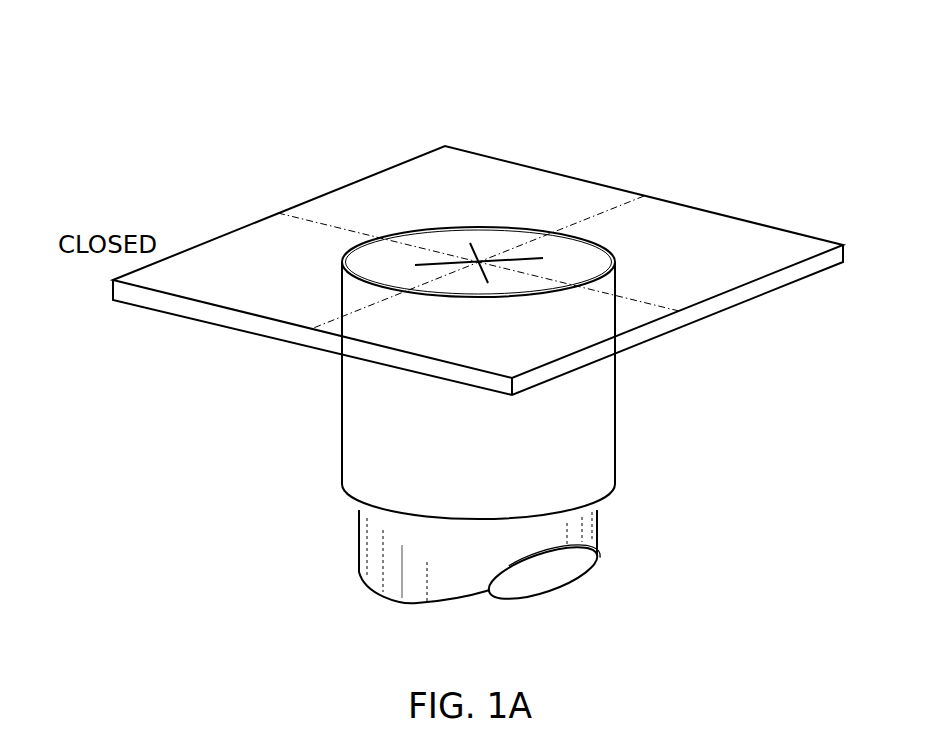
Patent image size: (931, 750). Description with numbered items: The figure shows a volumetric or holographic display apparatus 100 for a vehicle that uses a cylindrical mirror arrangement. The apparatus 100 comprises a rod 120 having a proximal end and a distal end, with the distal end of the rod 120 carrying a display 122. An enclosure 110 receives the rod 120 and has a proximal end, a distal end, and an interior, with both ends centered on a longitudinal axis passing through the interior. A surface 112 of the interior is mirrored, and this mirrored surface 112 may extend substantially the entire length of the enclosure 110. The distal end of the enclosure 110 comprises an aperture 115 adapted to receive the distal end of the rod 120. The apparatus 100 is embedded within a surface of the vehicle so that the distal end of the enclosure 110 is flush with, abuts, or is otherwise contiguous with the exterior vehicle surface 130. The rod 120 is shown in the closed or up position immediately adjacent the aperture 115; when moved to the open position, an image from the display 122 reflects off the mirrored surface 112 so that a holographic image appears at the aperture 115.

The apparatus 100 is at (147, 58).
The vehicle surface 130 is at (210, 265).
The enclosure 110 is at (583, 445).
The mirrored surface 112 is at (553, 373).
The aperture 115 is at (625, 268).
The display 122 is at (483, 252).
The rod 120 is at (398, 568).